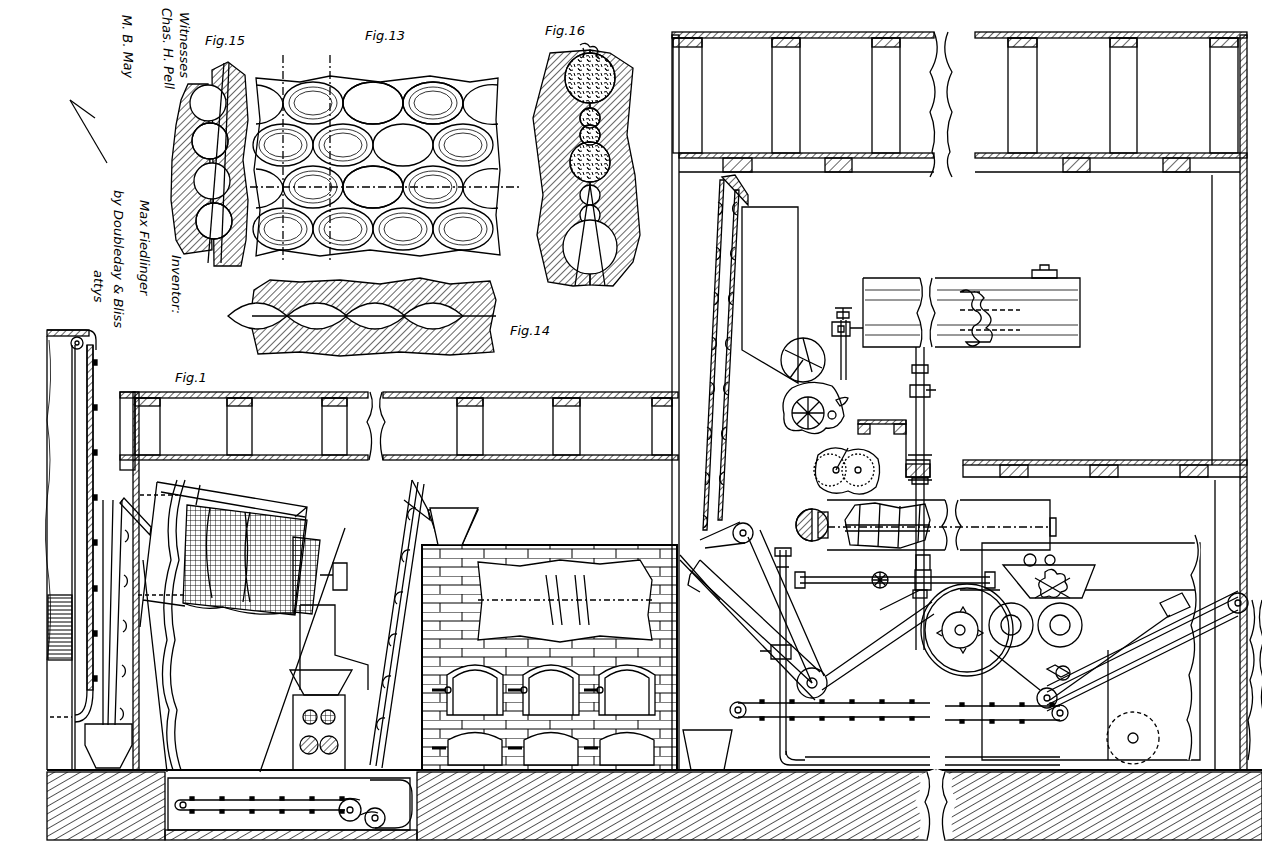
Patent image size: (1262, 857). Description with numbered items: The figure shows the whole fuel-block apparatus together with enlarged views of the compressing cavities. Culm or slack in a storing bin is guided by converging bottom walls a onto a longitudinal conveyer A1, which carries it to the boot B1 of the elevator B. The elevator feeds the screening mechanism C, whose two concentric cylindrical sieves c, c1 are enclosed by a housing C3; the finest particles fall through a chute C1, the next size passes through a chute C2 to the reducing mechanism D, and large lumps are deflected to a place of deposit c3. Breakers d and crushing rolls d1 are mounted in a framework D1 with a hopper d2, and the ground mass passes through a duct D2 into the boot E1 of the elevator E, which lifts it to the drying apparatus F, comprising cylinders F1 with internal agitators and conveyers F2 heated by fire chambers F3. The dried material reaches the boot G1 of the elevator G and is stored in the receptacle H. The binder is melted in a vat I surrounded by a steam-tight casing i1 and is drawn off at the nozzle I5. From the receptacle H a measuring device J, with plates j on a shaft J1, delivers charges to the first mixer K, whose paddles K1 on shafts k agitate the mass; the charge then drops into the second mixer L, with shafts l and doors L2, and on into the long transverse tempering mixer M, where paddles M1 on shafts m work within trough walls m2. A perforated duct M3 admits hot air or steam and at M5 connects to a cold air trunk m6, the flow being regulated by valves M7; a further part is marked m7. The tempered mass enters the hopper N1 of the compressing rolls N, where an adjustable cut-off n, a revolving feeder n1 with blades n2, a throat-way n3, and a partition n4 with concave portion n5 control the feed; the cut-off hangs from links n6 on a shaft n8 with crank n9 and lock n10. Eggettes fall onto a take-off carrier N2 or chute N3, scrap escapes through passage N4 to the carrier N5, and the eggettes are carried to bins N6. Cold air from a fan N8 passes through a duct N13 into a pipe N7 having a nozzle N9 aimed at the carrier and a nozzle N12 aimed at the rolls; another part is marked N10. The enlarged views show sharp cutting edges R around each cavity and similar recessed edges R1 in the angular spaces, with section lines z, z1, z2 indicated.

In FIG. 1, the converging wall a is at (71, 550).
In FIG. 1, the conveyer A1 is at (125, 507).
In FIG. 1, the elevator B is at (130, 678).
In FIG. 1, the boot B1 is at (108, 746).
In FIG. 1, the screening mechanism C is at (222, 550).
In FIG. 1, the cylindrical sieve c is at (198, 486).
In FIG. 1, the trunk or chute C1 is at (244, 626).
In FIG. 1, the trunk or chute C2 is at (300, 655).
In FIG. 1, the housing C3 is at (302, 485).
In FIG. 1, the cylindrical sieve c1 is at (318, 540).
In FIG. 1, the receptacle or place of deposit c3 is at (330, 625).
In FIG. 1, the breakers d is at (295, 715).
In FIG. 1, the crushing rolls d1 is at (298, 746).
In FIG. 1, the hopper d2 is at (300, 675).
In FIG. 1, the reducing mechanism D is at (340, 700).
In FIG. 1, the framework D1 is at (340, 730).
In FIG. 1, the duct D2 is at (327, 762).
In FIG. 1, the elevator E is at (424, 624).
In FIG. 1, the receptacle or boot E1 is at (412, 812).
In FIG. 1, the drying apparatus F is at (549, 639).
In FIG. 1, the cylinder F1 is at (566, 601).
In FIG. 1, the agitators and conveyers F2 is at (616, 613).
In FIG. 1, the fire chamber F3 is at (543, 715).
In FIG. 1, the elevator G is at (724, 361).
In FIG. 1, the boot G1 is at (707, 750).
In FIG. 1, the receptacle H is at (790, 235).
In FIG. 1, the cylinder or vat I is at (970, 272).
In FIG. 1, the jacketing cylinder or casing i1 is at (990, 326).
In FIG. 1, the nozzle I5 is at (848, 344).
In FIG. 1, the measuring device J is at (803, 351).
In FIG. 1, the shaft J1 is at (792, 355).
In FIG. 1, the wall or plate j is at (823, 340).
In FIG. 1, the first mixing device K is at (790, 400).
In FIG. 1, the mixers K1 is at (846, 398).
In FIG. 1, the shaft k is at (795, 418).
In FIG. 1, the second mixer L is at (872, 447).
In FIG. 1, the shaft l is at (840, 450).
In FIG. 1, the door L2 is at (866, 480).
In FIG. 1, the tempering and mixing device M is at (941, 535).
In FIG. 1, the blades or paddles M1 is at (868, 545).
In FIG. 1, the shaft m is at (893, 524).
In FIG. 1, the trough wall m2 is at (994, 507).
In FIG. 1, the duct M3 is at (895, 574).
In FIG. 1, the connection M5 is at (782, 656).
In FIG. 1, the stop-cock or valve M7 is at (879, 588).
In FIG. 1, the cold air pipe or trunk m6 is at (899, 732).
In FIG. 1, the pulley m7 is at (807, 615).
In FIG. 1, the compressing rolls N is at (1040, 647).
In FIG. 1, the hopper N1 is at (1130, 545).
In FIG. 1, the take-off carrier N2 is at (1185, 650).
In FIG. 1, the chute N3 is at (1015, 670).
In FIG. 1, the passage N4 is at (1023, 695).
In FIG. 1, the carrier N5 is at (905, 703).
In FIG. 1, the bin or storing chamber N6 is at (1250, 704).
In FIG. 1, the trunk or pipe N7 is at (1123, 620).
In FIG. 1, the fan N8 is at (1141, 707).
In FIG. 1, the nozzle N9 is at (1179, 591).
In FIG. 1, the roller N10 is at (1068, 680).
In FIG. 1, the nozzle N12 is at (1045, 668).
In FIG. 1, the duct N13 is at (1128, 690).
In FIG. 15, the agitating and feeding device n1 is at (210, 141).
In FIG. 1, the agitating and feeding device n1 is at (1011, 620).
In FIG. 15, the stirring and advancing blades n2 is at (214, 232).
In FIG. 13, the stirring and advancing blades n2 is at (373, 145).
In FIG. 14, the stirring and advancing blades n2 is at (362, 313).
In FIG. 16, the stirring and advancing blades n2 is at (565, 62).
In FIG. 1, the stirring and advancing blades n2 is at (1062, 573).
In FIG. 1, the throat-way n3 is at (1094, 596).
In FIG. 1, the wall or partition n4 is at (1100, 581).
In FIG. 1, the concave portion n5 is at (1051, 585).
In FIG. 1, the link n6 is at (1049, 581).
In FIG. 1, the shaft n8 is at (1019, 557).
In FIG. 1, the crank n9 is at (1060, 625).
In FIG. 1, the ratchet or lock n10 is at (1056, 556).
In FIG. 15, the cutting edge R is at (240, 188).
In FIG. 13, the cutting edge R is at (400, 146).
In FIG. 14, the cutting edge R is at (492, 300).
In FIG. 16, the cutting edge R is at (540, 238).
In FIG. 13, the sharp edge R1 is at (420, 110).
In FIG. 16, the sharp edge R1 is at (625, 204).
In FIG. 15, the cut-off n is at (211, 163).
In FIG. 16, the cut-off n is at (590, 235).
In FIG. 13, the section line z is at (387, 187).
In FIG. 13, the section line z1 is at (329, 157).
In FIG. 13, the section line z2 is at (281, 157).